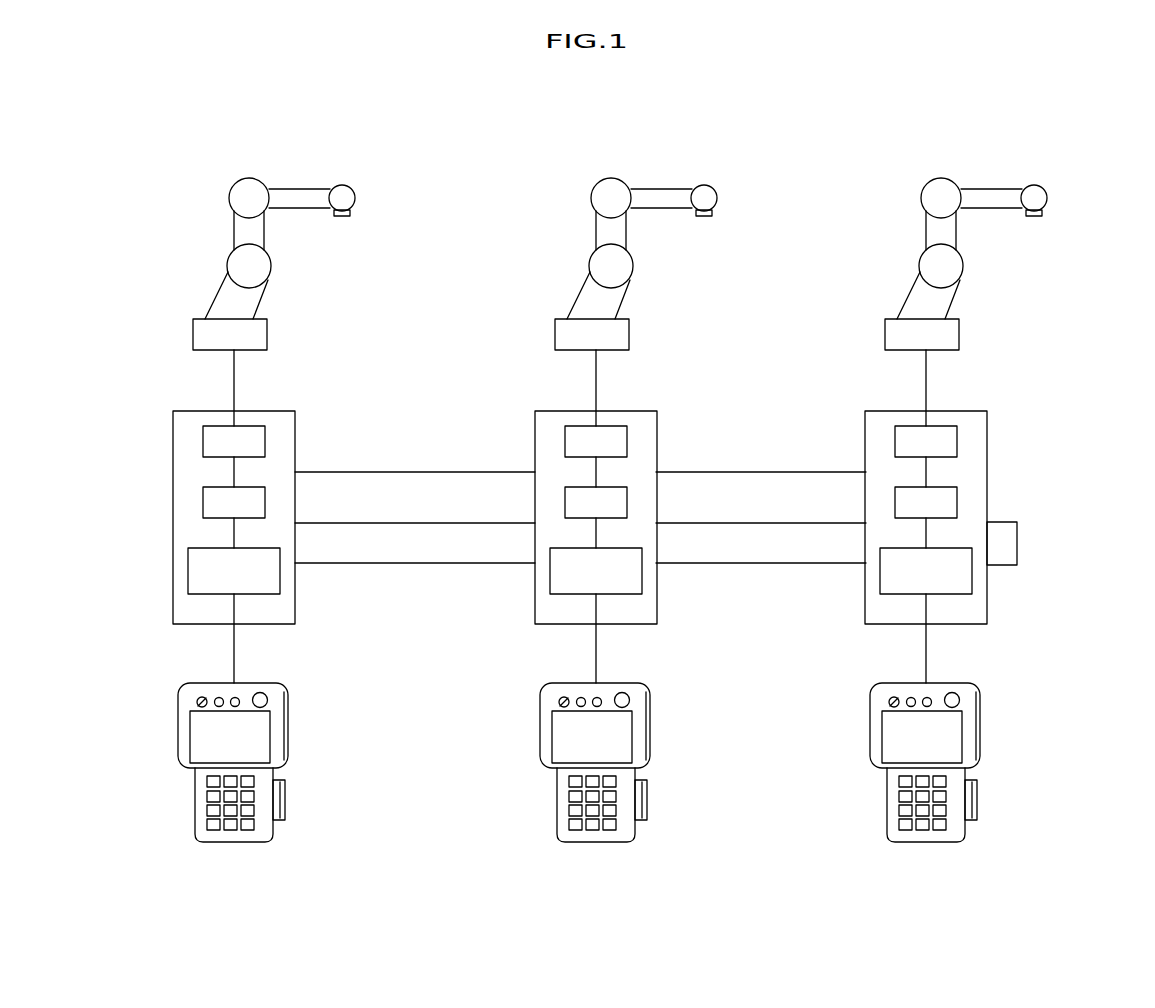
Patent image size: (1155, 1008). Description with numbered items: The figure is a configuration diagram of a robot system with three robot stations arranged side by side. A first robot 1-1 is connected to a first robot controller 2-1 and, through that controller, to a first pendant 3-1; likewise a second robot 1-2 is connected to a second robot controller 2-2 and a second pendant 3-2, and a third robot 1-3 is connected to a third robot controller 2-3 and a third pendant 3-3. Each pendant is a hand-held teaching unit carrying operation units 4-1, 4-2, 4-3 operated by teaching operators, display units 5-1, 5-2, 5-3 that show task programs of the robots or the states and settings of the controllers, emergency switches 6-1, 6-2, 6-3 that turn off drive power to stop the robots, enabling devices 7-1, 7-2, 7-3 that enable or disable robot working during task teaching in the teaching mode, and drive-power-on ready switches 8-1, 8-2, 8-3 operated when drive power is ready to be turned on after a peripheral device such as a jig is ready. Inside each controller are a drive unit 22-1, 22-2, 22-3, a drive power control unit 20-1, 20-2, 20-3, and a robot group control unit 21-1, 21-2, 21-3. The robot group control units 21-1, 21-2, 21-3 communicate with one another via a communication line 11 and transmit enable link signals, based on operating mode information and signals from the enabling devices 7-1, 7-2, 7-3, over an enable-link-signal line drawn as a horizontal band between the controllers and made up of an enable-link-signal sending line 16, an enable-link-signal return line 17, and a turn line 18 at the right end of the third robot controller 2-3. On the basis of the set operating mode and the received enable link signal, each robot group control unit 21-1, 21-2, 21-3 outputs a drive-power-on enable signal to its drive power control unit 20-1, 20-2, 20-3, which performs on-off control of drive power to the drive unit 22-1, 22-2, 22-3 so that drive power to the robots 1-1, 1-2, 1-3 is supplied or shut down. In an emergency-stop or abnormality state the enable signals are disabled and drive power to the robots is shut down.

The first robot 1-1 is at (293, 188).
The second robot 1-2 is at (642, 236).
The third robot 1-3 is at (971, 236).
The first robot controller 2-1 is at (223, 516).
The second robot controller 2-2 is at (589, 516).
The third robot controller 2-3 is at (915, 516).
The first pendant 3-1 is at (256, 795).
The second pendant 3-2 is at (606, 788).
The third pendant 3-3 is at (931, 765).
The operation unit 4-1 is at (207, 813).
The operation unit 4-2 is at (559, 824).
The operation unit 4-3 is at (884, 828).
The display unit 5-1 is at (260, 743).
The display unit 5-2 is at (635, 749).
The display unit 5-3 is at (965, 737).
The emergency switch 6-1 is at (270, 700).
The emergency switch 6-2 is at (665, 722).
The emergency switch 6-3 is at (988, 672).
The enabling device 7-1 is at (278, 818).
The enabling device 7-2 is at (684, 814).
The enabling device 7-3 is at (1008, 801).
The drive-power-on ready switch 8-1 is at (232, 777).
The drive-power-on ready switch 8-2 is at (548, 776).
The drive-power-on ready switch 8-3 is at (879, 776).
The communication line 11 is at (333, 472).
The enable-link-signal sending line 16 is at (330, 523).
The enable-link-signal return line 17 is at (681, 565).
The turn line 18 is at (1017, 532).
The drive power control unit 20-1 is at (204, 500).
The drive power control unit 20-2 is at (540, 482).
The drive power control unit 20-3 is at (873, 473).
The robot group control unit 21-1 is at (218, 595).
The robot group control unit 21-2 is at (572, 615).
The robot group control unit 21-3 is at (890, 615).
The drive unit 22-1 is at (205, 425).
The drive unit 22-2 is at (559, 405).
The drive unit 22-3 is at (891, 405).